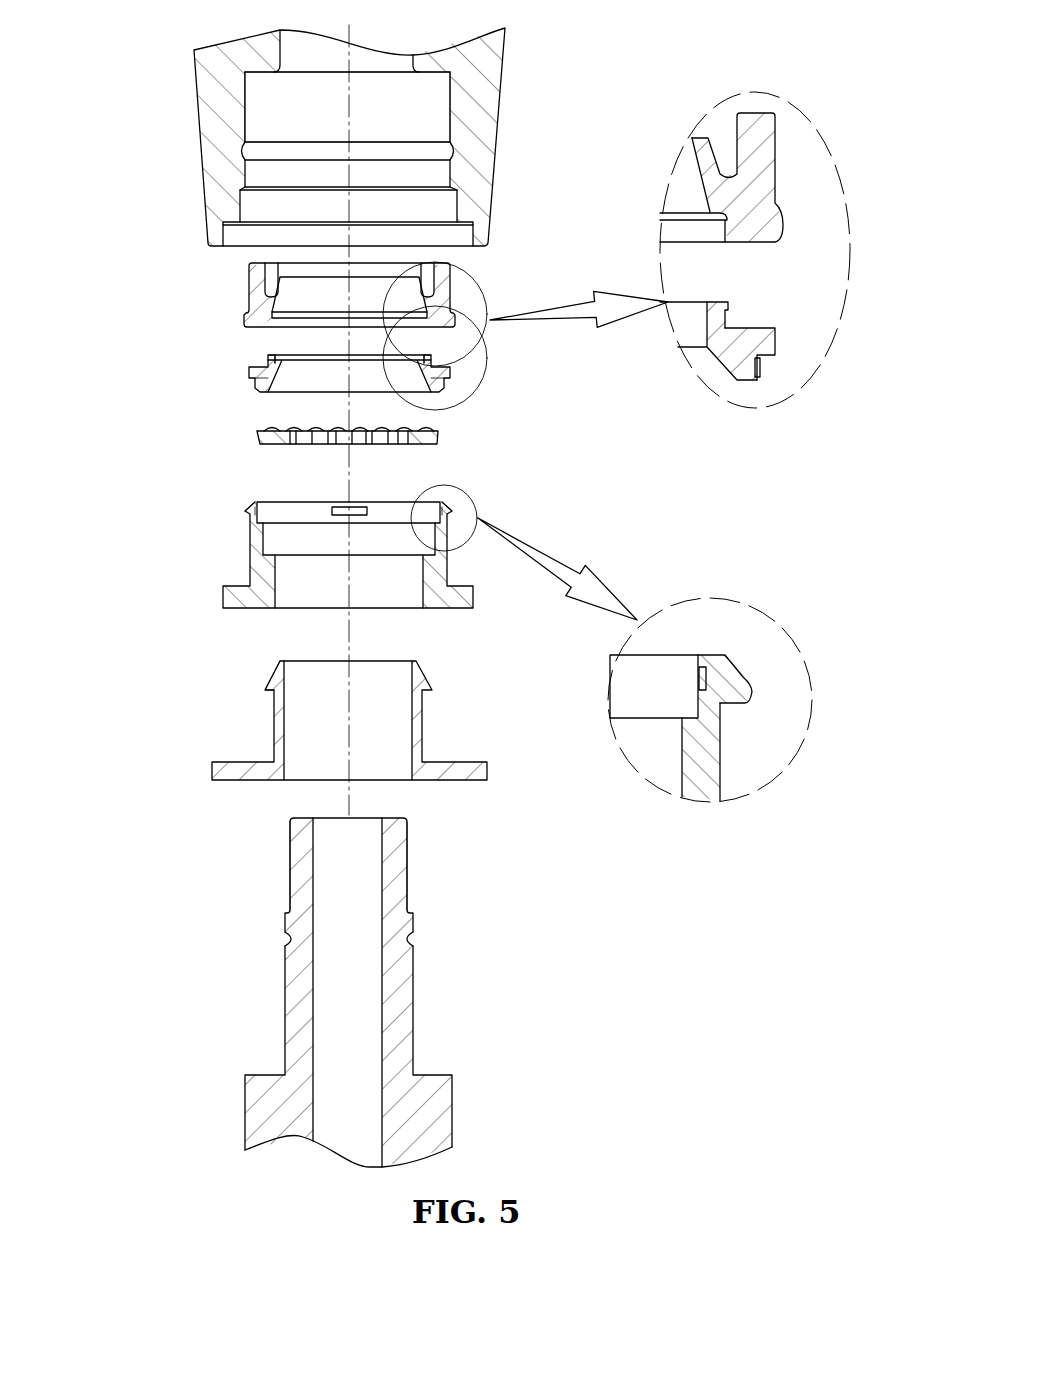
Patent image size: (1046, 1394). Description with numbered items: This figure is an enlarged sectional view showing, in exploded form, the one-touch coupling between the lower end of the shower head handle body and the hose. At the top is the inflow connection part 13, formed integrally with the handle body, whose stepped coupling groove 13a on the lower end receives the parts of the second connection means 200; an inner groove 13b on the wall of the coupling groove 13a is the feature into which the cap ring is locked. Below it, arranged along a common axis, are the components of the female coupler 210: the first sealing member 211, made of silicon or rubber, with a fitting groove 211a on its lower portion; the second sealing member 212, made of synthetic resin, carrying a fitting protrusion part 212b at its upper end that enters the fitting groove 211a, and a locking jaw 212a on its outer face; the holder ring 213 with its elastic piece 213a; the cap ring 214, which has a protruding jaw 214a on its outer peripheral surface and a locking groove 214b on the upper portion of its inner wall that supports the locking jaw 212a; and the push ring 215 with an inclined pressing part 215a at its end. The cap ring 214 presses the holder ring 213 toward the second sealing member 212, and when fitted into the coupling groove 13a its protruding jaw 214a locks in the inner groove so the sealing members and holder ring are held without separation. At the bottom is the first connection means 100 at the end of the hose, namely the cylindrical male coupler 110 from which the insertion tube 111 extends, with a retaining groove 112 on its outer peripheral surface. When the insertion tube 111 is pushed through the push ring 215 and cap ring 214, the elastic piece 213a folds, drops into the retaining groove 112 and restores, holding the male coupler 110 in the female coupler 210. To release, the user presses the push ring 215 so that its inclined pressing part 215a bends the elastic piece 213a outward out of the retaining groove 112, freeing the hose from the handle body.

The inflow connection part 13 is at (295, 137).
The coupling groove 13a is at (240, 124).
The locking groove 13b is at (243, 155).
The first connection means 100 is at (313, 992).
The male coupler 110 is at (162, 935).
The insertion tube 111 is at (293, 877).
The retaining groove 112 is at (292, 937).
The second connection means 200 is at (128, 258).
The female coupler 210 is at (593, 275).
The first sealing member 211 is at (435, 205).
The fitting groove 211a is at (272, 318).
The second sealing member 212 is at (471, 367).
The locking jaw 212a is at (255, 387).
The fitting protrusion part 212b is at (268, 358).
The holder ring 213 is at (356, 438).
The elastic piece 213a is at (287, 444).
The cap ring 214 is at (484, 635).
The protruding jaw 214a is at (243, 510).
The locking groove 214b is at (248, 521).
The push ring 215 is at (369, 708).
The inclined pressing part 215a is at (272, 675).